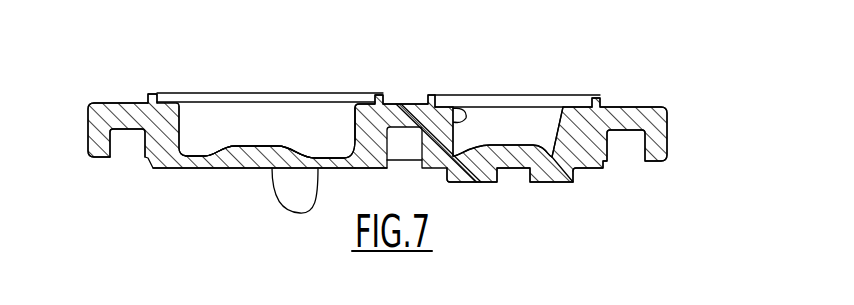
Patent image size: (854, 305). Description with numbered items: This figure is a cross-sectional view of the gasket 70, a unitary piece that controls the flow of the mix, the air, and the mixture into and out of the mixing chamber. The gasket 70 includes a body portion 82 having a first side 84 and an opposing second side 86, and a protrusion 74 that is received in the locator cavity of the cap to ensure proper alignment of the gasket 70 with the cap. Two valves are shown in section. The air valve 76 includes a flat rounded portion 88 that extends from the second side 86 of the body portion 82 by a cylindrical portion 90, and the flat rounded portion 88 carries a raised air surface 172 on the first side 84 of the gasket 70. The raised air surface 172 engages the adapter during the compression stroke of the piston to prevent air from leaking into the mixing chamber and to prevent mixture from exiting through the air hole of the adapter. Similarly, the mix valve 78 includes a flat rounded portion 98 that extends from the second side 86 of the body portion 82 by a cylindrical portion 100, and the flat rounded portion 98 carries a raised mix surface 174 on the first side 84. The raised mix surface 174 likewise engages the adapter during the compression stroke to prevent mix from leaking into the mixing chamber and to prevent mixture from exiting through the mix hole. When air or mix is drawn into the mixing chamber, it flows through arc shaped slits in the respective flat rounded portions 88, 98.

The gasket 70 is at (690, 65).
The protrusion 74 is at (293, 196).
The air valve 76 is at (560, 184).
The mix valve 78 is at (200, 170).
The body portion 82 is at (112, 103).
The first side 84 is at (152, 103).
The second side 86 is at (128, 129).
The flat rounded portion 88 is at (550, 148).
The cylindrical portion 90 is at (456, 118).
The flat rounded portion 98 is at (234, 169).
The cylindrical portion 100 is at (355, 127).
The raised air surface 172 is at (500, 146).
The raised mix surface 174 is at (223, 150).